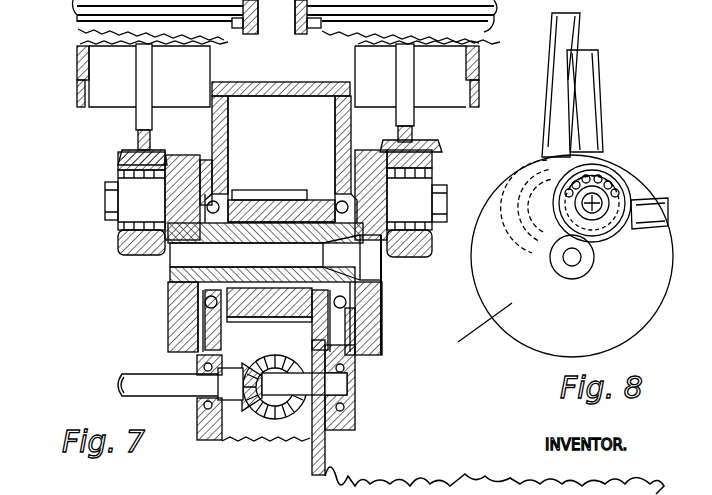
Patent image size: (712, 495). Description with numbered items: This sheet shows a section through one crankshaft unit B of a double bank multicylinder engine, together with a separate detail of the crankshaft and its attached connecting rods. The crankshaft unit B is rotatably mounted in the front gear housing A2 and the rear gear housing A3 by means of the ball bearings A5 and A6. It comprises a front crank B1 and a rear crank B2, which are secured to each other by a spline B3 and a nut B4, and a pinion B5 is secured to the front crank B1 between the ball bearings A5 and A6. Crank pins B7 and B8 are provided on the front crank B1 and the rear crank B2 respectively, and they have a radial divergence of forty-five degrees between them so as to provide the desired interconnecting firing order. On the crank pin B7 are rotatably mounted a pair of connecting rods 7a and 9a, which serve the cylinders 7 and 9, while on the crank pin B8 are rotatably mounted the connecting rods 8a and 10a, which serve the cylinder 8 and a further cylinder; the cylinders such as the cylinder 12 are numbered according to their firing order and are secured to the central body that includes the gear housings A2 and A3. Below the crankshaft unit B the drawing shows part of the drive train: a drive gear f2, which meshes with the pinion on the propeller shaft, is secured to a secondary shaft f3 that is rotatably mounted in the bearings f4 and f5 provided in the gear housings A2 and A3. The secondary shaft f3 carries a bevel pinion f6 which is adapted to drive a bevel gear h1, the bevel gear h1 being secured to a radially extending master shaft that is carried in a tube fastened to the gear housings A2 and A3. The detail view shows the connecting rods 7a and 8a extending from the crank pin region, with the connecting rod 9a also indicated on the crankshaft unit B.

In FIG. 7, the cylinder 7 is at (472, 62).
In FIG. 7, the connecting rod 7a is at (410, 121).
In FIG. 8, the connecting rod 7a is at (590, 96).
In FIG. 7, the cylinder 8 is at (77, 68).
In FIG. 7, the connecting rod 8a is at (145, 112).
In FIG. 8, the connecting rod 8a is at (566, 40).
In FIG. 7, the cylinder 9 is at (76, 30).
In FIG. 7, the connecting rod 9a is at (416, 255).
In FIG. 8, the connecting rod 9a is at (666, 200).
In FIG. 7, the connecting rod 10a is at (133, 257).
In FIG. 7, the cylinder 12 is at (488, 30).
In FIG. 7, the front gear housing A2 is at (340, 138).
In FIG. 7, the rear gear housing A3 is at (216, 132).
In FIG. 7, the ball bearing A5 is at (352, 302).
In FIG. 7, the ball bearing A6 is at (200, 306).
In FIG. 7, the crankshaft unit B is at (112, 290).
In FIG. 7, the front crank B1 is at (384, 345).
In FIG. 7, the rear crank B2 is at (168, 346).
In FIG. 7, the spline B3 is at (186, 287).
In FIG. 7, the nut B4 is at (150, 296).
In FIG. 7, the pinion B5 is at (290, 160).
In FIG. 7, the crank pin B7 is at (412, 200).
In FIG. 8, the crank pin B7 is at (576, 216).
In FIG. 7, the crank pin B8 is at (136, 195).
In FIG. 7, the drive gear f2 is at (308, 457).
In FIG. 7, the secondary shaft f3 is at (128, 385).
In FIG. 7, the bearing f4 is at (352, 378).
In FIG. 7, the bearing f5 is at (200, 408).
In FIG. 7, the bevel pinion f6 is at (210, 432).
In FIG. 7, the bevel gear h1 is at (330, 420).